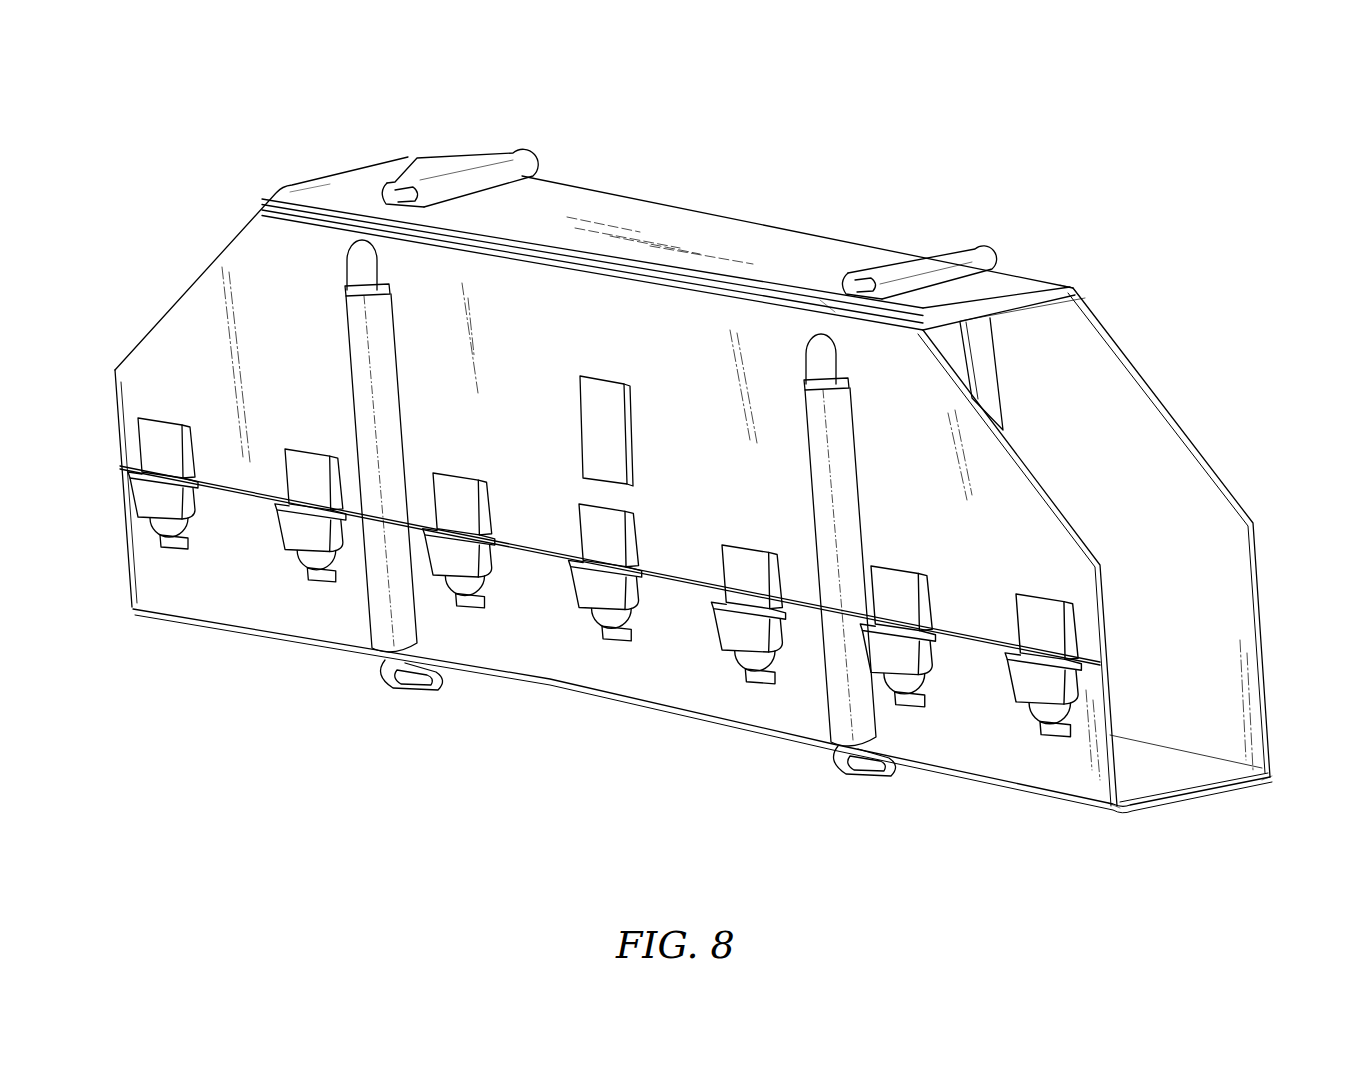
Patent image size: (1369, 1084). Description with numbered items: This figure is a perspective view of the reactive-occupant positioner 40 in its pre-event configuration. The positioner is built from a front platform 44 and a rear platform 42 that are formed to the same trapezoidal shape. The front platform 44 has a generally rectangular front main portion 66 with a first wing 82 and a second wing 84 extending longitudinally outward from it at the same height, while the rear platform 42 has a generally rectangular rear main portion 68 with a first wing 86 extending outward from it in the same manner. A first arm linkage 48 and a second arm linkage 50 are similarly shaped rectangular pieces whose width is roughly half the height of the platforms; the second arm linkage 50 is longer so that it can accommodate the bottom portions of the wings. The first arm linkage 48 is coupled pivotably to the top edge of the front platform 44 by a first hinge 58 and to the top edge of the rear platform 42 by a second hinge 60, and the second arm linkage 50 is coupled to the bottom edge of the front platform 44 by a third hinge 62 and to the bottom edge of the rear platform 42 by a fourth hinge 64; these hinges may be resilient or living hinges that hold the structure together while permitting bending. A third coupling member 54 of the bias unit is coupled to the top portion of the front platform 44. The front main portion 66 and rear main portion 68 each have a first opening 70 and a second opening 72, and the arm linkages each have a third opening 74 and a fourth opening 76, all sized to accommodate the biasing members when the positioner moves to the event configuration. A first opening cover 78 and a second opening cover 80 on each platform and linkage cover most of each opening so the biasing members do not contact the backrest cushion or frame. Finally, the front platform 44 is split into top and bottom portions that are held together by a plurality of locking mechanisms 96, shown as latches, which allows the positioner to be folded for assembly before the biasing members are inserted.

The reactive-occupant positioner 40 is at (196, 86).
The rear platform 42 is at (1103, 374).
The front platform 44 is at (617, 668).
The first arm linkage 48 is at (676, 222).
The second arm linkage 50 is at (1187, 802).
The third coupling member 54 is at (337, 195).
The first hinge 58 is at (285, 222).
The second hinge 60 is at (1073, 288).
The third hinge 62 is at (1117, 808).
The fourth hinge 64 is at (1280, 775).
The front main portion 66 is at (540, 453).
The rear main portion 68 is at (1008, 364).
The first opening 70 is at (827, 307).
The second opening 72 is at (367, 268).
The third opening 74 is at (926, 250).
The fourth opening 76 is at (527, 171).
The first opening cover 78 is at (893, 268).
The second opening cover 80 is at (500, 165).
The first wing 82 is at (1043, 527).
The second wing 84 is at (160, 322).
The first wing 86 is at (1223, 585).
The locking mechanism 96 is at (633, 533).